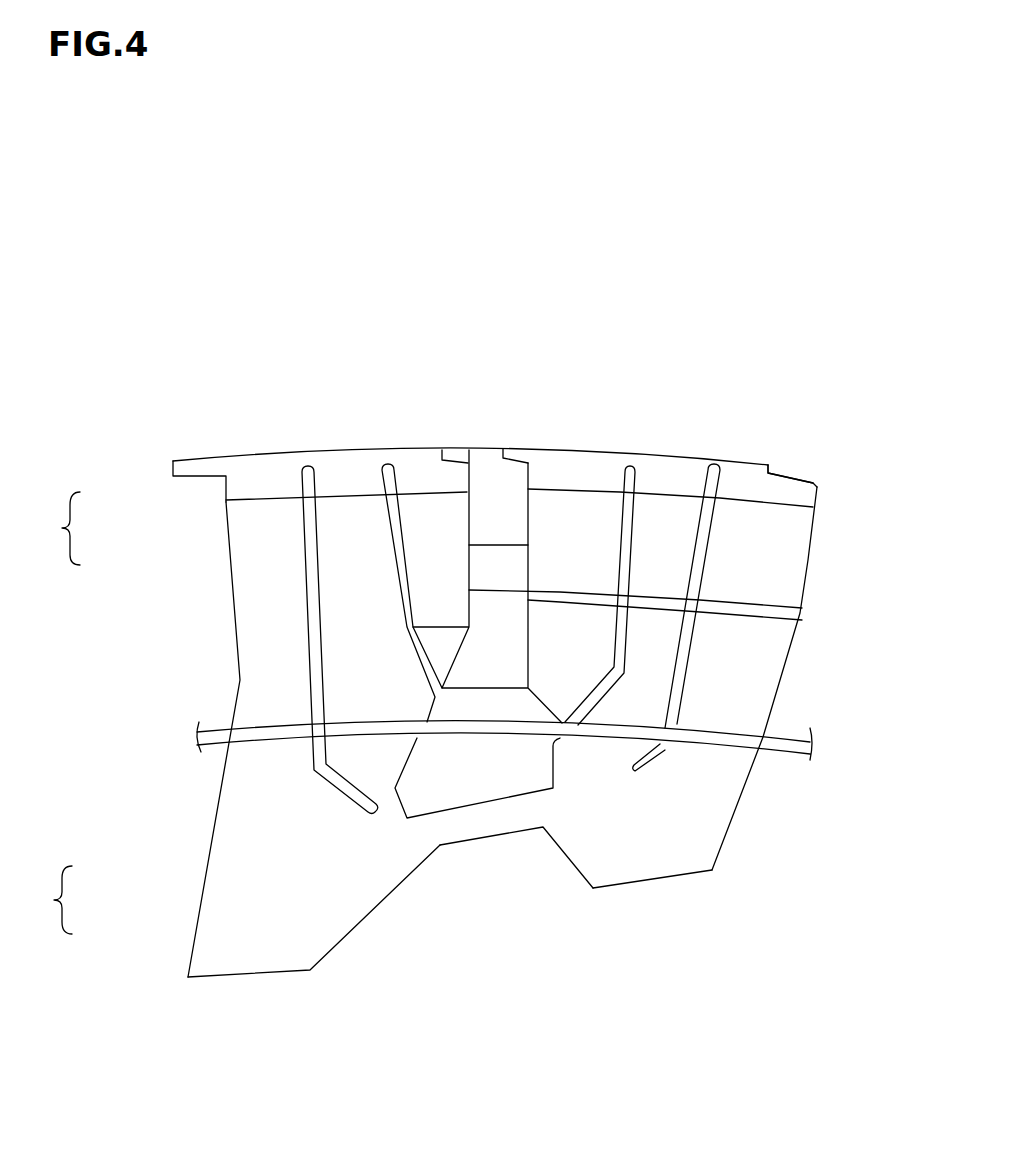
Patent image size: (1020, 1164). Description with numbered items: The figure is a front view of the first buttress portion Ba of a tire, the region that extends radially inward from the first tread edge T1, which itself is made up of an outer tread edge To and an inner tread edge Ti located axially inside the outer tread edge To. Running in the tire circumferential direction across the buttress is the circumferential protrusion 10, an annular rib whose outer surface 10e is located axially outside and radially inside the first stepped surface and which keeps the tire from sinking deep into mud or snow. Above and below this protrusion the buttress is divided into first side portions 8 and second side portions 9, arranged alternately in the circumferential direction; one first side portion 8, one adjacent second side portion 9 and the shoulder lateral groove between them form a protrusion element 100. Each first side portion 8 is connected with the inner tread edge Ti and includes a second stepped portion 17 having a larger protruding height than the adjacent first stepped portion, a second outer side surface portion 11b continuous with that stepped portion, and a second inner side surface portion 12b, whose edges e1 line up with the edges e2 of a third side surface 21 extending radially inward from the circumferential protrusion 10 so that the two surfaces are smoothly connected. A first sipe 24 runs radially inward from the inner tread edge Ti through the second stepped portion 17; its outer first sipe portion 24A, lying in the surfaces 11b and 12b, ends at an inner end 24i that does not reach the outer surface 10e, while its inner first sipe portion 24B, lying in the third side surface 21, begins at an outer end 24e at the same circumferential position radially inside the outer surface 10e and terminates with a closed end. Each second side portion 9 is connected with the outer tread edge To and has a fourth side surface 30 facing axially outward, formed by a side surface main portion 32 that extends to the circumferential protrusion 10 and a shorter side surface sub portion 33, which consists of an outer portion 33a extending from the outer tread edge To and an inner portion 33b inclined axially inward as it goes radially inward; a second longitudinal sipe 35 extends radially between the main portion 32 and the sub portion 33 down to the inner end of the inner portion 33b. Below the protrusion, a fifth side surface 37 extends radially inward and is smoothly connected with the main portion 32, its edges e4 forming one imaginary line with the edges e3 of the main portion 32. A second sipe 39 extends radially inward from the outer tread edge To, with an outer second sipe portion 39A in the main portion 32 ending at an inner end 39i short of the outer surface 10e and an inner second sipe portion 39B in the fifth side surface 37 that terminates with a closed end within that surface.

The protrusion element 100 is at (178, 445).
The outer tread edge To is at (255, 478).
The inner tread edge Ti is at (763, 492).
The first tread edge T1 is at (797, 490).
The fourth side surface 30 is at (54, 528).
The side surface main portion 32 is at (263, 563).
The side surface sub portion 33 is at (430, 542).
The outer portion 33a is at (438, 528).
The inner portion 33b is at (433, 640).
The second longitudinal sipe 35 is at (432, 660).
The second stepped portion 17 is at (760, 608).
The edges of side surface main portion e3 is at (445, 700).
The edges of second inner side surface portion e1 is at (600, 690).
The second outer side surface portion 11b is at (683, 527).
The outer first sipe portion 24A is at (713, 545).
The second inner side surface portion 12b is at (730, 662).
The circumferential protrusion 10 is at (760, 757).
The outer surface of circumferential protrusion 10e is at (197, 732).
The edges of fifth side surface e4 is at (222, 770).
The second side portion 9 is at (190, 793).
The second sipe 39 is at (44, 900).
The outer second sipe portion 39A is at (313, 785).
The inner second sipe portion 39B is at (320, 705).
The inner end of outer second sipe portion 39i is at (352, 708).
The fifth side surface 37 is at (232, 937).
The first buttress portion Ba is at (185, 992).
The first side portion 8 is at (602, 950).
The edges of third side surface e2 is at (558, 740).
The first sipe 24 is at (624, 780).
The inner end of outer first sipe portion 24i is at (668, 737).
The outer end of inner first sipe portion 24e is at (658, 750).
The third side surface 21 is at (680, 830).
The inner first sipe portion 24B is at (637, 767).